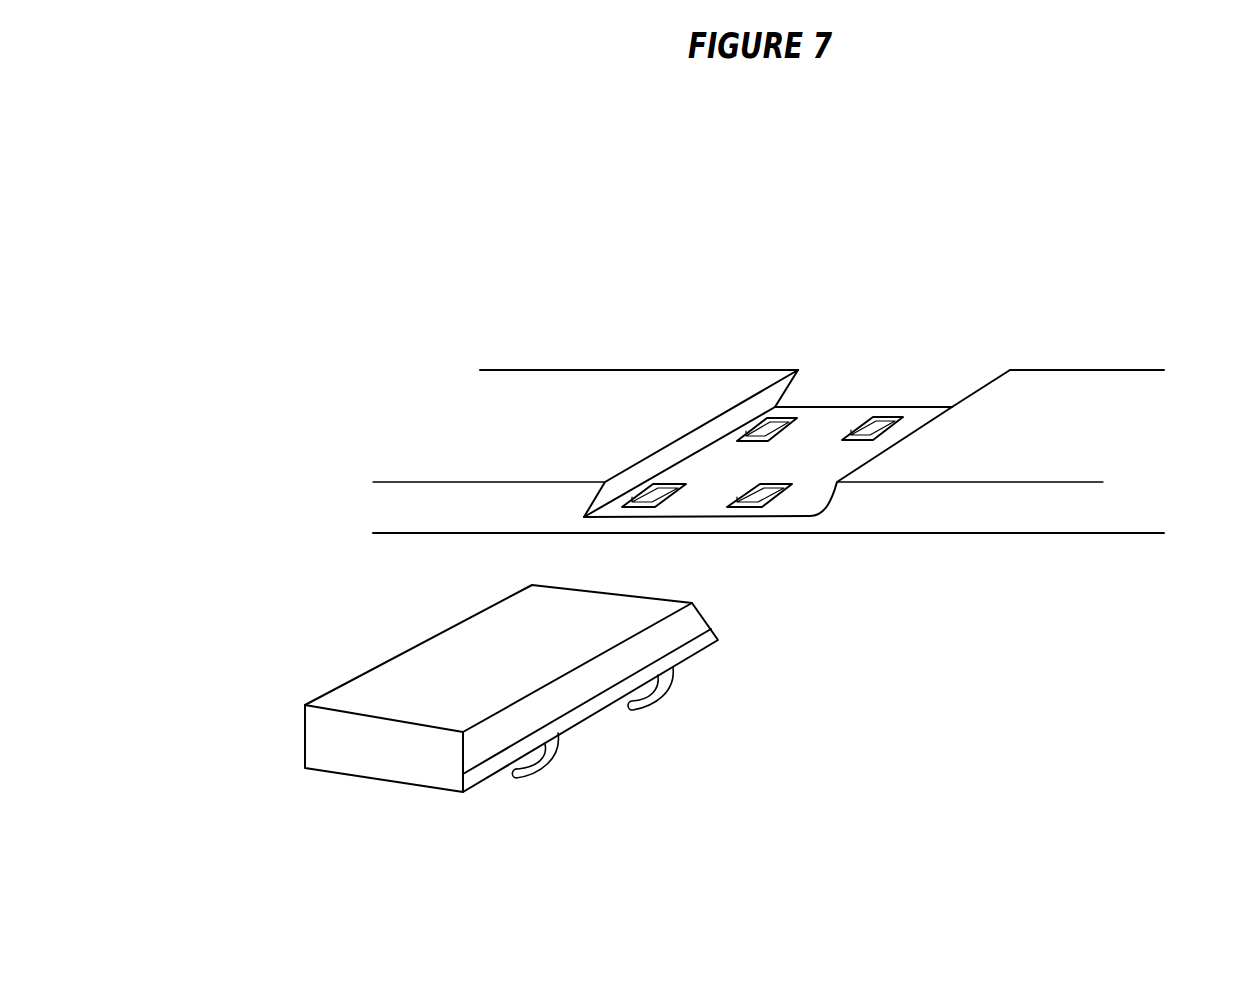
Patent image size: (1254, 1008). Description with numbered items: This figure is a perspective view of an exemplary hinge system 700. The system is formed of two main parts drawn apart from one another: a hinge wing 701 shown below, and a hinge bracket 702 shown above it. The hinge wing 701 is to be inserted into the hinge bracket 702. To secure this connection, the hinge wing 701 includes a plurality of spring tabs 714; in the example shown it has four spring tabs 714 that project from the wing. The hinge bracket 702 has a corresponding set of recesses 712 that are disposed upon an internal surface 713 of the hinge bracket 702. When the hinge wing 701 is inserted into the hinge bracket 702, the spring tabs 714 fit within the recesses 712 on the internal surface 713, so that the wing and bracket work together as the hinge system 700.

The hinge system 700 is at (425, 263).
The hinge wing 701 is at (372, 778).
The hinge bracket 702 is at (1052, 367).
The recesses 712 is at (778, 438).
The internal surface 713 is at (765, 475).
The spring tabs 714 is at (552, 758).